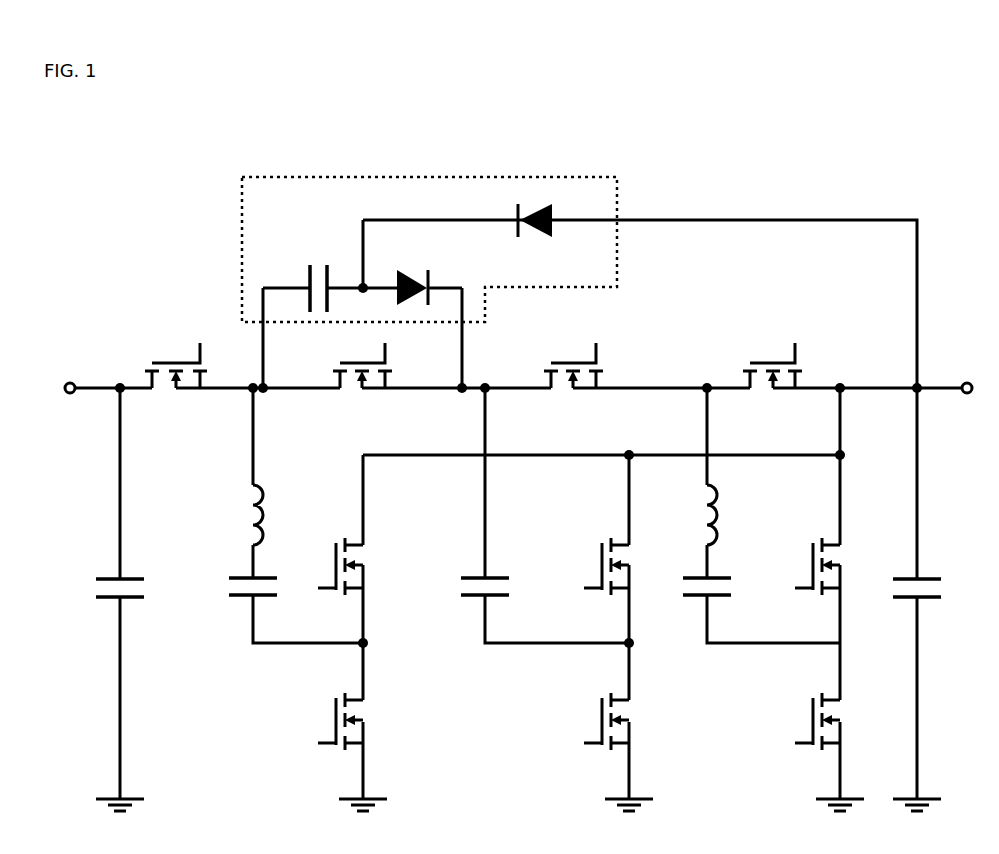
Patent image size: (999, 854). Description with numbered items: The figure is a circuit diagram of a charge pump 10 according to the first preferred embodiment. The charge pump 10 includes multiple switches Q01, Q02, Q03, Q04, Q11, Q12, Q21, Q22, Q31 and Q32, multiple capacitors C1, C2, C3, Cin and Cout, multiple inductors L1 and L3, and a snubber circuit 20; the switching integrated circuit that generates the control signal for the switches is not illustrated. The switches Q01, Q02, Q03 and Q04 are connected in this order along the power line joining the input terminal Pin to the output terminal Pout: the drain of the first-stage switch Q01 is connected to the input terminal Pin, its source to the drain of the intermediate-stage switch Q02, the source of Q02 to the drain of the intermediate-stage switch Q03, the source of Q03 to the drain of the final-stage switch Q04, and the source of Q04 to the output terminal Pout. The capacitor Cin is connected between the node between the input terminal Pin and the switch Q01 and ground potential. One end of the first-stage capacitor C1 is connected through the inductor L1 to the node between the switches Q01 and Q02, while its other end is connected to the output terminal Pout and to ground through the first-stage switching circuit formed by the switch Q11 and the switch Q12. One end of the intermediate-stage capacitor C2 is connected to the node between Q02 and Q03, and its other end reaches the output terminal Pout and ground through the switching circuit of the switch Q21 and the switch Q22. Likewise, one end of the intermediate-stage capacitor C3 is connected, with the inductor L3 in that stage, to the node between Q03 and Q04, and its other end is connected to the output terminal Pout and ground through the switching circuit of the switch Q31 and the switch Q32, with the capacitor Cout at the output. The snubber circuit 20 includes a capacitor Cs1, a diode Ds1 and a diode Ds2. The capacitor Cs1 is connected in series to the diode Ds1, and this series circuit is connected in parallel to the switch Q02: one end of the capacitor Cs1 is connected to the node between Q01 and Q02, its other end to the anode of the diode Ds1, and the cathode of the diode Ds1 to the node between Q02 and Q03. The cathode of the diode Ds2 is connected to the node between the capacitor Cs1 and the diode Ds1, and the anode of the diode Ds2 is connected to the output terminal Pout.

The charge pump 10 is at (120, 181).
The snubber circuit 20 is at (617, 192).
The input terminal Pin is at (63, 376).
The output terminal Pout is at (966, 376).
The switch Q01 is at (164, 364).
The switch Q02 is at (352, 364).
The switch Q03 is at (561, 364).
The switch Q04 is at (760, 364).
The switch Q11 is at (336, 550).
The switch Q12 is at (326, 733).
The switch Q21 is at (603, 550).
The switch Q22 is at (592, 733).
The switch Q31 is at (814, 550).
The switch Q32 is at (803, 733).
The inductor L1 is at (273, 503).
The inductor L3 is at (727, 503).
The capacitor C1 is at (247, 602).
The capacitor C2 is at (479, 602).
The capacitor C3 is at (702, 602).
The capacitor Cin is at (131, 602).
The capacitor Cout is at (931, 602).
The capacitor Cs1 is at (313, 276).
The diode Ds1 is at (412, 275).
The diode Ds2 is at (544, 239).